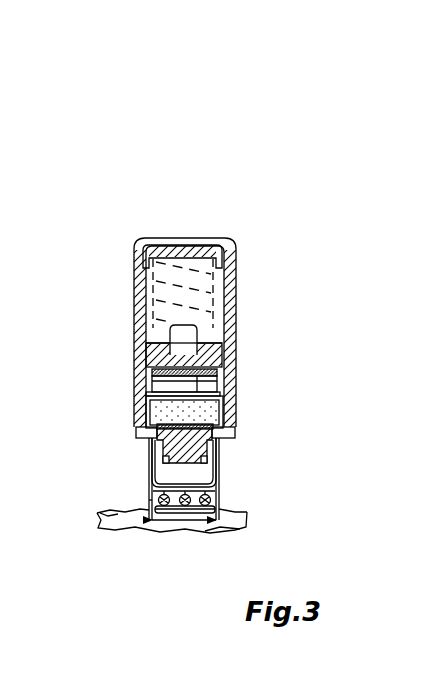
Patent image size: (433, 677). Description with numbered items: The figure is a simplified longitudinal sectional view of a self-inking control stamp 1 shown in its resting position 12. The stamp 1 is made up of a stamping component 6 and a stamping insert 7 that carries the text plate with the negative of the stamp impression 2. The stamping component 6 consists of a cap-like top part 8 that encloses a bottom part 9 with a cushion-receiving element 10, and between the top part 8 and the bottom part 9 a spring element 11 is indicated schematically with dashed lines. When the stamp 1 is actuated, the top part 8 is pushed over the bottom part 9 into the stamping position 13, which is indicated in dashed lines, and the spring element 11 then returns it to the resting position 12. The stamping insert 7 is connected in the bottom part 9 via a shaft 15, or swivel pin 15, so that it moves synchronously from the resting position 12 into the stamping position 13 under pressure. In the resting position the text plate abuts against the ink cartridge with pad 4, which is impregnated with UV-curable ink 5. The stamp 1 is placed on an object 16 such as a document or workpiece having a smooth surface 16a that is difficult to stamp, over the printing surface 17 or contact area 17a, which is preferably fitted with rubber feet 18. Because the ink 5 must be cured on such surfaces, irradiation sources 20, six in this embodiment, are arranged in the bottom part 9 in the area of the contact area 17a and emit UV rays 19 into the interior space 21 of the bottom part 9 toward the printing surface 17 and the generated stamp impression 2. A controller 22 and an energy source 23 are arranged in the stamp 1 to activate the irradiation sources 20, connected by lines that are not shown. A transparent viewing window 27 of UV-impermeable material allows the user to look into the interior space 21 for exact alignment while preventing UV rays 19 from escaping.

The stamp 1 is at (97, 228).
The stamp impression 2 is at (151, 538).
The ink cartridge with pad 4 is at (176, 410).
The UV-curable ink 5 is at (205, 403).
The stamping component 6 is at (145, 307).
The stamping insert 7 is at (175, 438).
The top part 8 is at (143, 285).
The bottom part 9 is at (150, 475).
The cushion-receiving element 10 is at (140, 393).
The spring element 11 is at (214, 305).
The resting position 12 is at (208, 323).
The stamping position 13 is at (145, 500).
The shaft 15 is at (222, 434).
The object 16 is at (208, 531).
The smooth surface 16a is at (117, 514).
The printing surface 17 is at (188, 522).
The contact area 17a is at (152, 508).
The rubber feet 18 is at (154, 507).
The UV rays 19 is at (211, 498).
The irradiation source 20 is at (238, 487).
The interior space 21 is at (157, 470).
The controller 22 is at (205, 372).
The energy source 23 is at (212, 383).
The viewing window 27 is at (214, 479).